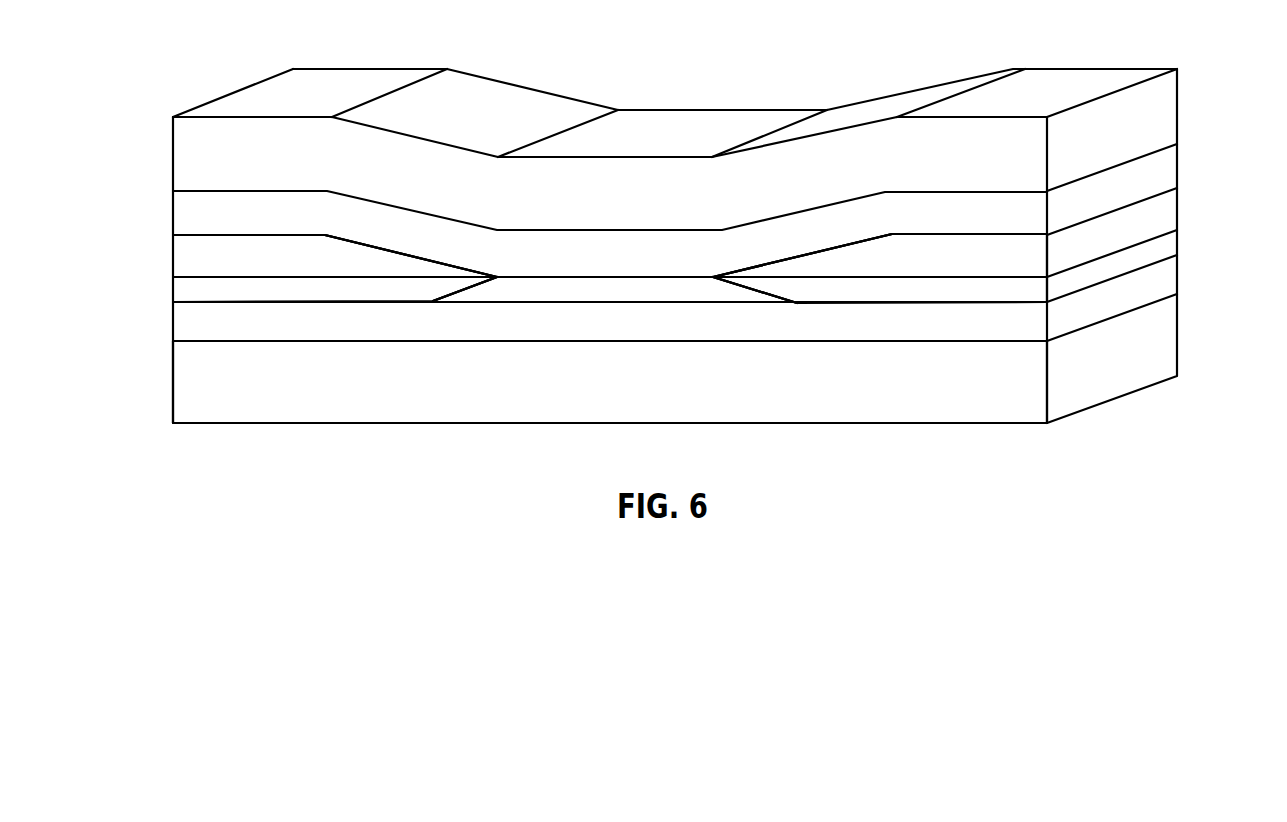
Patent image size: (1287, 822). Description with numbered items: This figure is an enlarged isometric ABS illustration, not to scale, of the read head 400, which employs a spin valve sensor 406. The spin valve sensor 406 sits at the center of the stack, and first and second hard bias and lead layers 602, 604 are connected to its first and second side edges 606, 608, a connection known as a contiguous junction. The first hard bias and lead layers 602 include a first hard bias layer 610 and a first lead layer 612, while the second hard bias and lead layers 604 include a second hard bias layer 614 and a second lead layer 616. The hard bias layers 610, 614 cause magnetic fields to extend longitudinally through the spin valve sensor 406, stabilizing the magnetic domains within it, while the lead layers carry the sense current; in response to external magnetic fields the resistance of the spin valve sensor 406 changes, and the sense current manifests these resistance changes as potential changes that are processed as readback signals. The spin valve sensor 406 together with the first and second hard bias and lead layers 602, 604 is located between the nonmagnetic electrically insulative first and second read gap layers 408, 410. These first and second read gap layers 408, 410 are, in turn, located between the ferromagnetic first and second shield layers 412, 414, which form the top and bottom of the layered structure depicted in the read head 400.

The read head 400 is at (756, 62).
The spin valve sensor 406 is at (528, 263).
The first read gap layer 408 is at (930, 327).
The second read gap layer 410 is at (380, 220).
The first shield layer 412 is at (317, 425).
The second shield layer 414 is at (540, 100).
The first hard bias and lead layers 602 is at (168, 238).
The second hard bias and lead layers 604 is at (1183, 187).
The first side edge 606 is at (455, 290).
The second side edge 608 is at (770, 297).
The first hard bias layer 610 is at (200, 287).
The first lead layer 612 is at (208, 252).
The second hard bias layer 614 is at (995, 287).
The second lead layer 616 is at (1002, 252).